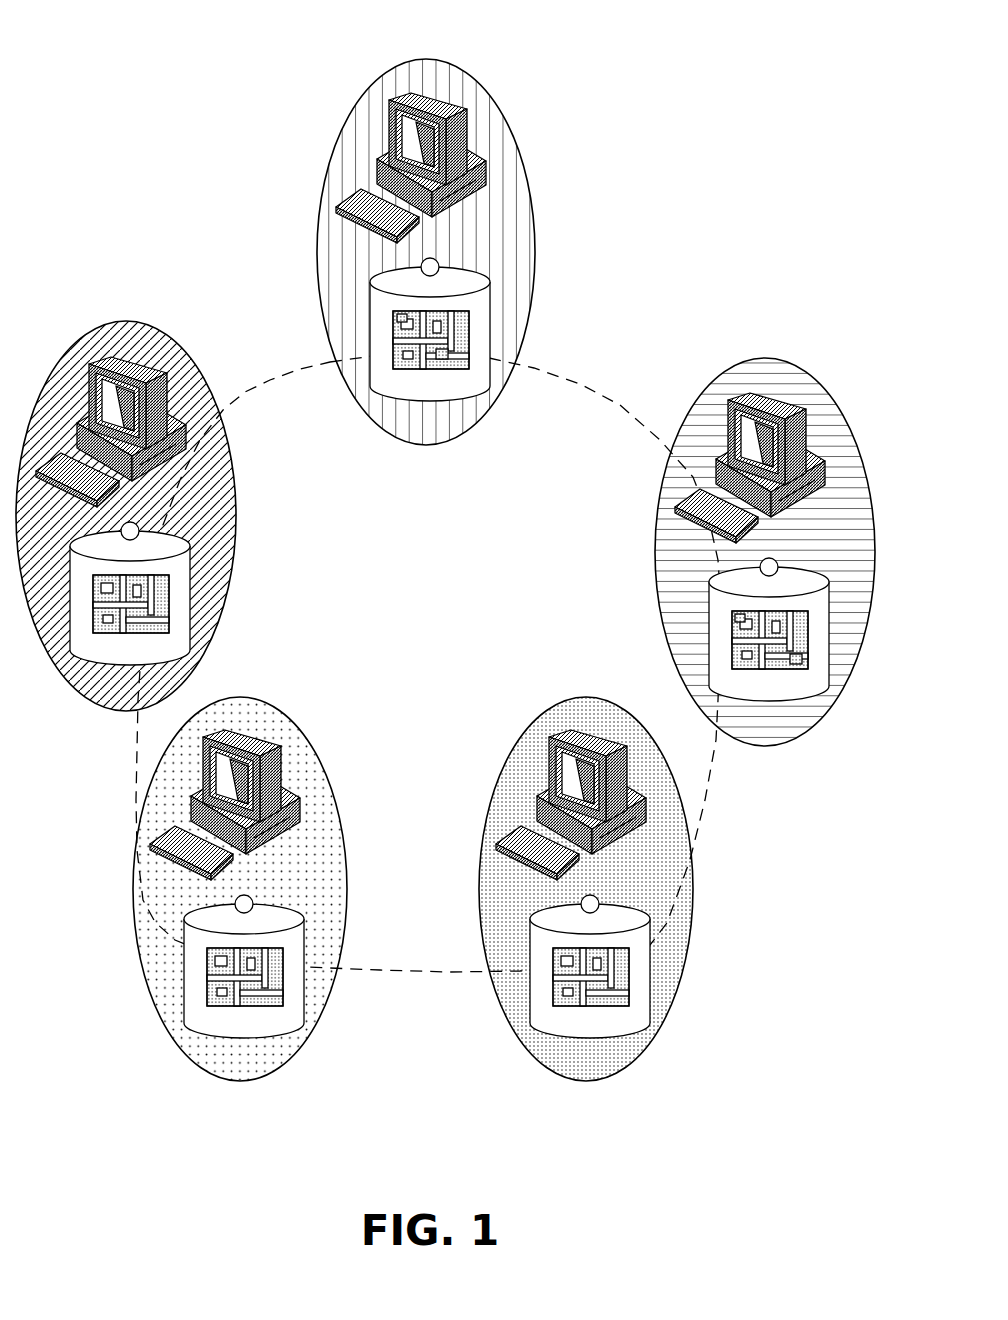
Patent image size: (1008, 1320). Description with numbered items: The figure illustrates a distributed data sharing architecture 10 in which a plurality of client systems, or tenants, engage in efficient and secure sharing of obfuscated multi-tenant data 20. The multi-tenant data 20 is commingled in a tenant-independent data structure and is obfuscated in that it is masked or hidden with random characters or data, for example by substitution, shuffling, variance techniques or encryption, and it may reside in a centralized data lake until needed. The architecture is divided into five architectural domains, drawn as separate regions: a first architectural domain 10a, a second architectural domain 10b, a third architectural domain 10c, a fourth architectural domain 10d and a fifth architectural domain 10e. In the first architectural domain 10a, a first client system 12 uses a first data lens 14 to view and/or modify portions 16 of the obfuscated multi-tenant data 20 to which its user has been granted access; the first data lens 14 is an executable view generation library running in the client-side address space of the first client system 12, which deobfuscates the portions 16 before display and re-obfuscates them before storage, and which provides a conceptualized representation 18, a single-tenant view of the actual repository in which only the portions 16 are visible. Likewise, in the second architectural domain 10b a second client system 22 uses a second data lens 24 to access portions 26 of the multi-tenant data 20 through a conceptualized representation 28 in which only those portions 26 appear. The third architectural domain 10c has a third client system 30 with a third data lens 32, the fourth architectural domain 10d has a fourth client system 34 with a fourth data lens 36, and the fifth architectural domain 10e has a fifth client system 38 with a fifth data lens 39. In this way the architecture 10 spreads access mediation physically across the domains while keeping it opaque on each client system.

The distributed data sharing architecture 10 is at (420, 4).
The first architectural domain 10a is at (322, 178).
The second architectural domain 10b is at (749, 359).
The third architectural domain 10c is at (570, 697).
The fourth architectural domain 10d is at (283, 702).
The fifth architectural domain 10e is at (142, 320).
The first client system 12 is at (482, 137).
The first data lens 14 is at (439, 264).
The portions 16 is at (404, 321).
The conceptualized representation 18 is at (370, 303).
The obfuscated multi-tenant data 20 is at (501, 640).
The second client system 22 is at (813, 434).
The second data lens 24 is at (758, 563).
The portions 26 is at (730, 617).
The conceptualized representation 28 is at (707, 603).
The third client system 30 is at (632, 787).
The third data lens 32 is at (599, 902).
The fourth client system 34 is at (300, 814).
The fourth data lens 36 is at (253, 903).
The fifth client system 38 is at (175, 398).
The fifth data lens 39 is at (140, 527).